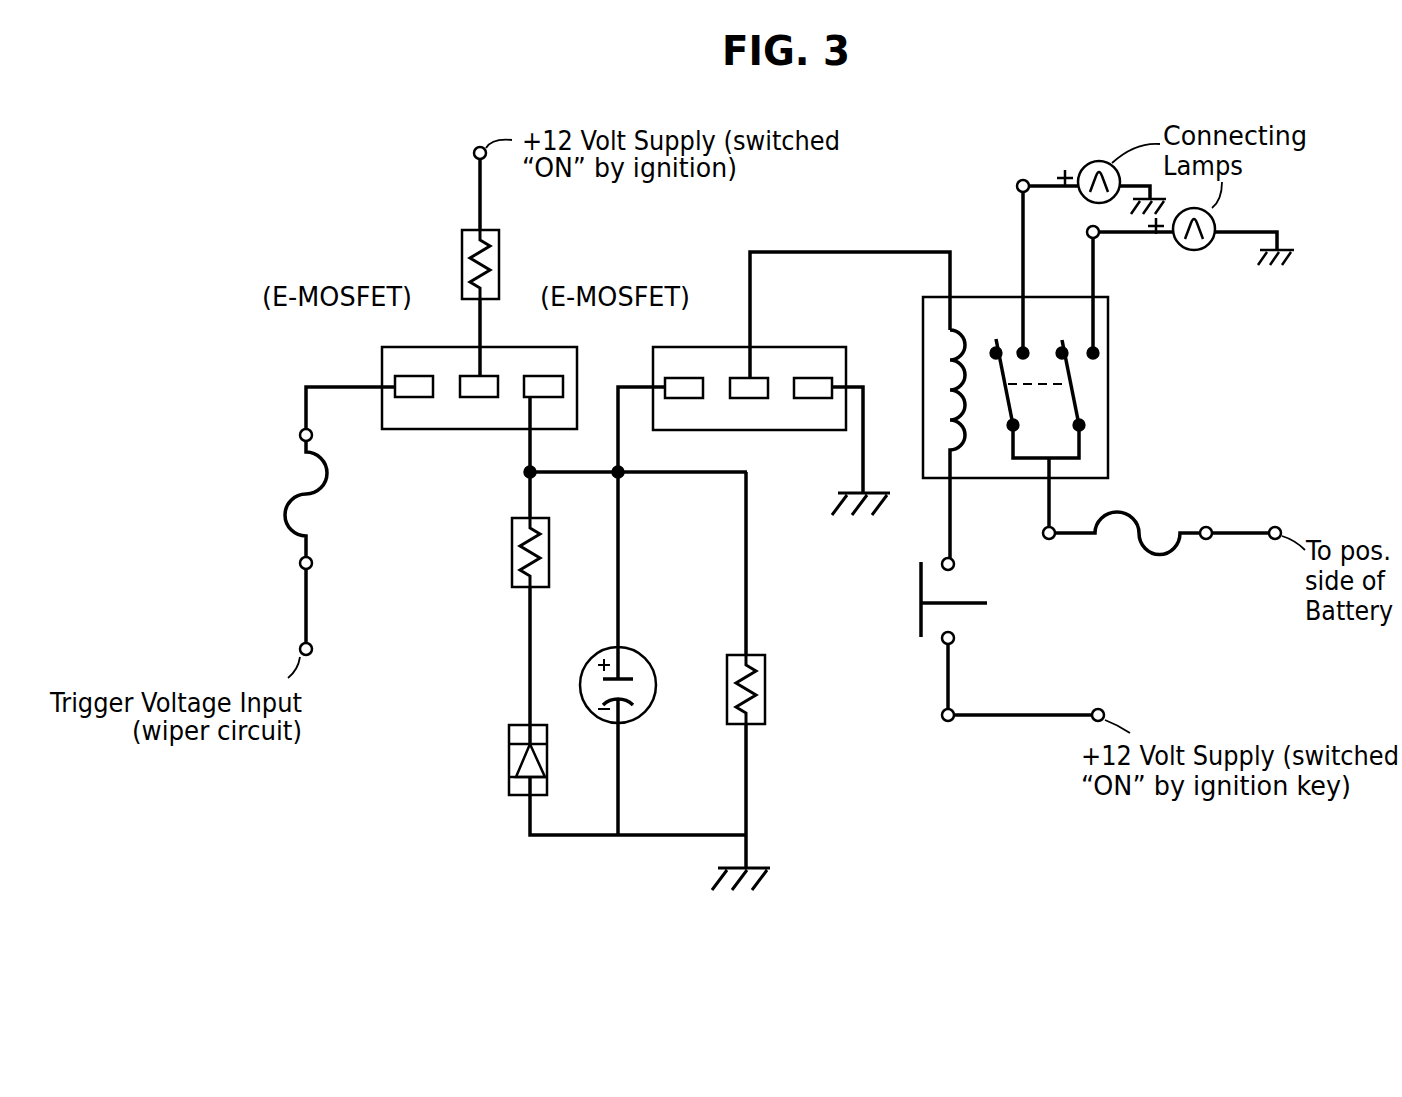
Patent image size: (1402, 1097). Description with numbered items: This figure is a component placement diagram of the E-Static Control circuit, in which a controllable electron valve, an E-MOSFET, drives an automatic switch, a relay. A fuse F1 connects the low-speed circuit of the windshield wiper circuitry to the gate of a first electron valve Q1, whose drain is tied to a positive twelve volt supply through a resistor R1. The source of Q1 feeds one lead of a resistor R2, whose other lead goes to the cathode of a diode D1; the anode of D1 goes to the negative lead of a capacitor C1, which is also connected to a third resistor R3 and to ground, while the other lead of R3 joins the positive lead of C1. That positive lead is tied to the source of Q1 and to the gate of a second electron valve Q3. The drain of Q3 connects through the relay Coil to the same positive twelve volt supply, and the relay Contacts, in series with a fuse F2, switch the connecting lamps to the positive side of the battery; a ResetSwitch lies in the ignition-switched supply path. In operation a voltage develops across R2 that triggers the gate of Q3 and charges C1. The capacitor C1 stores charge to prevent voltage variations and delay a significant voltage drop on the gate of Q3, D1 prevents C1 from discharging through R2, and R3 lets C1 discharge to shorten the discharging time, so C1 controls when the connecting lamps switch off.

The resistor R1 is at (460, 262).
The first electron valve Q1 is at (380, 374).
The second electron valve Q3 is at (651, 374).
The resistor R2 is at (512, 563).
The third resistor R3 is at (727, 694).
The capacitor C1 is at (590, 658).
The diode D1 is at (508, 768).
The fuse F1 is at (284, 508).
The fuse F2 is at (1128, 514).
The relay coil Coil is at (962, 350).
The relay contacts Contacts is at (965, 352).
The reset switch ResetSwitch is at (982, 603).